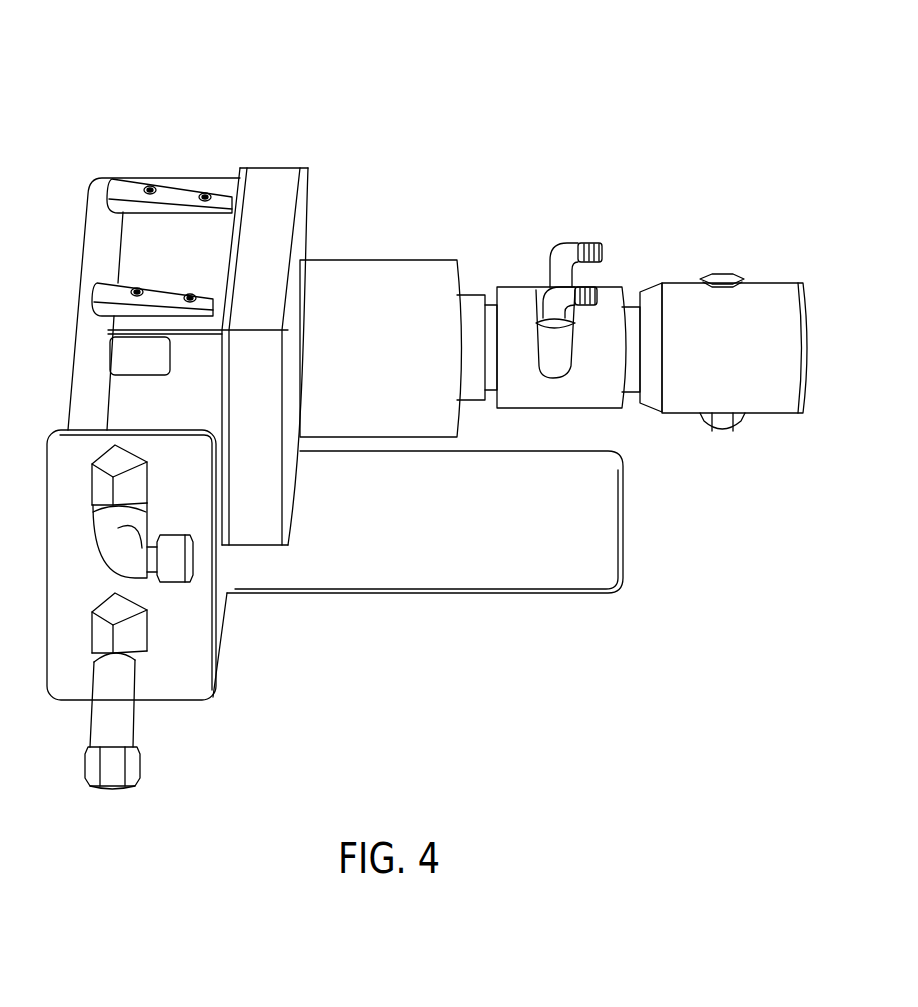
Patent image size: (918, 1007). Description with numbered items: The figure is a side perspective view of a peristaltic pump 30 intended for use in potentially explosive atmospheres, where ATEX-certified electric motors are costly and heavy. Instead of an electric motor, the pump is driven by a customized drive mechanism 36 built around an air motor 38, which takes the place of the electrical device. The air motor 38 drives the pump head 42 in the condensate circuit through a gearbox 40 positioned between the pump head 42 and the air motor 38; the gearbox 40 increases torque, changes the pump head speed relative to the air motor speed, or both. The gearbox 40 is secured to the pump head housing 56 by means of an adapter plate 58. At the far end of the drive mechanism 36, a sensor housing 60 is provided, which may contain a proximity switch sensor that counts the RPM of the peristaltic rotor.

The peristaltic pump 30 is at (551, 128).
The drive mechanism 36 is at (620, 206).
The air motor 38 is at (517, 322).
The gearbox 40 is at (370, 298).
The pump head 42 is at (155, 250).
The pump head housing 56 is at (187, 190).
The adapter plate 58 is at (273, 175).
The sensor housing 60 is at (768, 292).